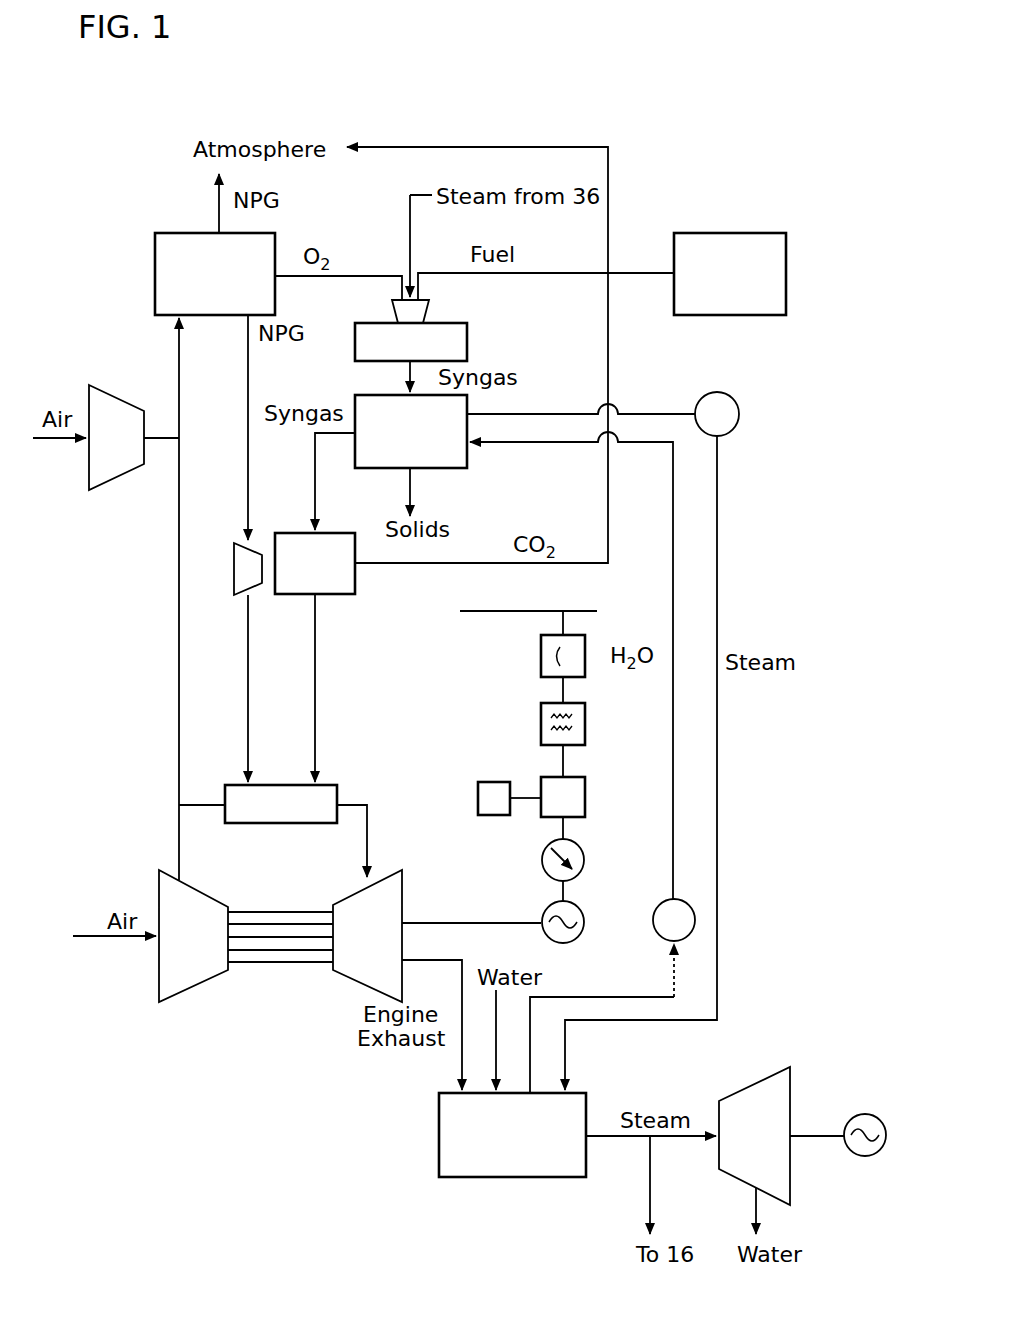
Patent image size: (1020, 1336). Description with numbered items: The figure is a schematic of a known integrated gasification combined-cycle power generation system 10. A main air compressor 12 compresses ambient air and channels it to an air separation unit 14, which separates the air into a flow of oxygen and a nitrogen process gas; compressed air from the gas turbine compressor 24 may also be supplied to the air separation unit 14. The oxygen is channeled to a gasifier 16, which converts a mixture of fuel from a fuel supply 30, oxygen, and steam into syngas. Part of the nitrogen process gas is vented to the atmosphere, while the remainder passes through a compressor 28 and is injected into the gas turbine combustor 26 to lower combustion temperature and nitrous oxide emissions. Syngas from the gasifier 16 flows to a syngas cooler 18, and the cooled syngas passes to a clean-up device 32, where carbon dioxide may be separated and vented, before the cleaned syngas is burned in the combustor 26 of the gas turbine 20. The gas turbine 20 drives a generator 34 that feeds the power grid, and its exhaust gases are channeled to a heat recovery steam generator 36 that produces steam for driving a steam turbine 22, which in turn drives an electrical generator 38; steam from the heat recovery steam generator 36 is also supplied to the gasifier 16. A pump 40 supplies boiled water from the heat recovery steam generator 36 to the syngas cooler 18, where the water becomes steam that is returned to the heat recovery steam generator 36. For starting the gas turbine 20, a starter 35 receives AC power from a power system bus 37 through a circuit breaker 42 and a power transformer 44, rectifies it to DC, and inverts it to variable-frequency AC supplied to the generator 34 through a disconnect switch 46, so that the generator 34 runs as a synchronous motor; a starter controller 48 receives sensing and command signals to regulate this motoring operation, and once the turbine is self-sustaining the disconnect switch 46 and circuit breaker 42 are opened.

The integrated gasification combined-cycle power generation system 10 is at (126, 98).
The main air compressor 12 is at (116, 437).
The air separation unit 14 is at (215, 274).
The gasifier 16 is at (467, 340).
The syngas cooler 18 is at (467, 458).
The gas turbine 20 is at (243, 909).
The steam turbine 22 is at (752, 1082).
The gas turbine compressor 24 is at (203, 890).
The gas turbine combustor 26 is at (281, 804).
The compressor 28 is at (243, 543).
The fuel supply 30 is at (730, 274).
The clean-up device 32 is at (355, 583).
The generator 34 is at (563, 943).
The starter 35 is at (585, 797).
The heat recovery steam generator 36 is at (512, 1135).
The power system bus 37 is at (739, 408).
The electrical generator 38 is at (862, 1113).
The pump 40 is at (663, 903).
The circuit breaker 42 is at (540, 655).
The power transformer 44 is at (541, 712).
The disconnect switch 46 is at (583, 853).
The starter controller 48 is at (495, 782).